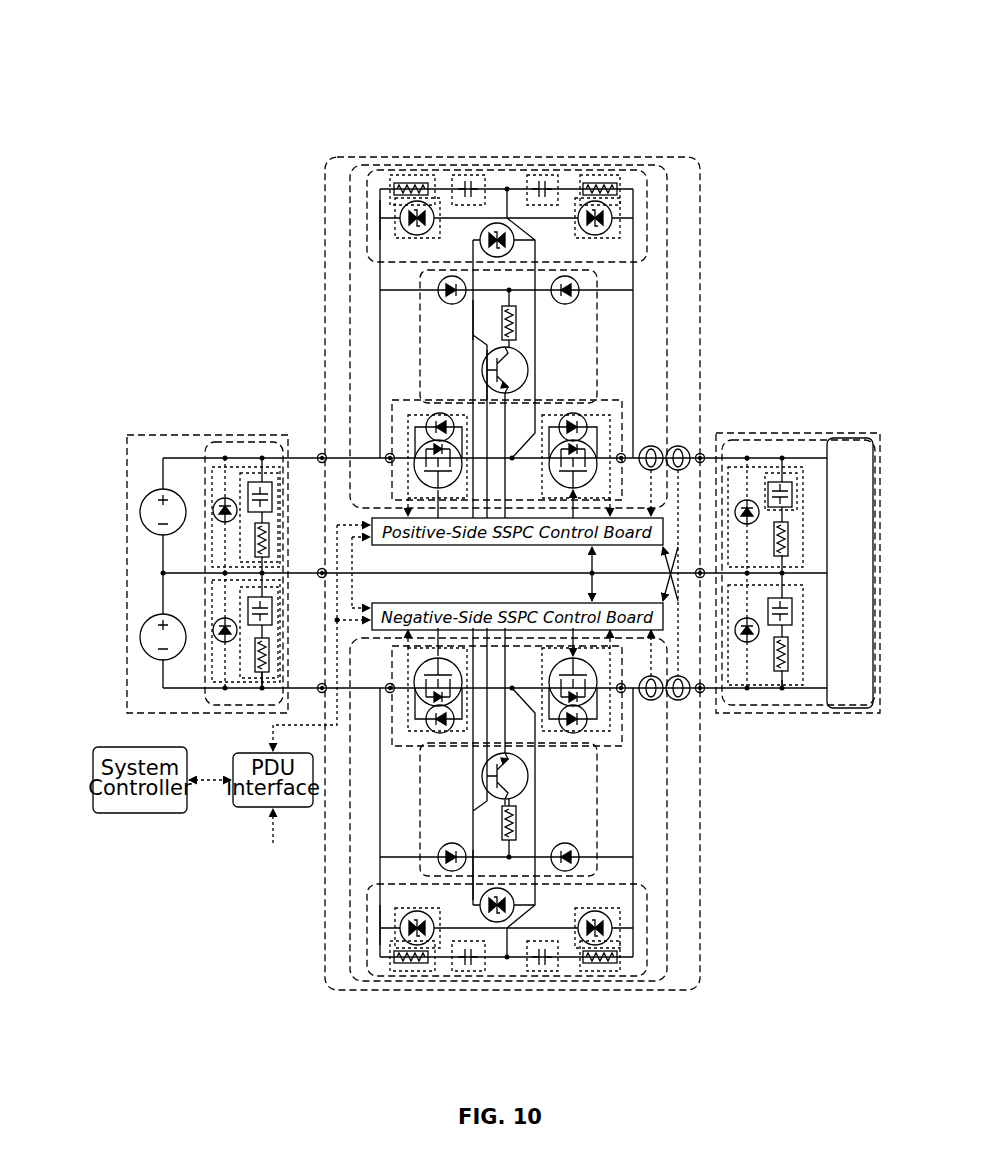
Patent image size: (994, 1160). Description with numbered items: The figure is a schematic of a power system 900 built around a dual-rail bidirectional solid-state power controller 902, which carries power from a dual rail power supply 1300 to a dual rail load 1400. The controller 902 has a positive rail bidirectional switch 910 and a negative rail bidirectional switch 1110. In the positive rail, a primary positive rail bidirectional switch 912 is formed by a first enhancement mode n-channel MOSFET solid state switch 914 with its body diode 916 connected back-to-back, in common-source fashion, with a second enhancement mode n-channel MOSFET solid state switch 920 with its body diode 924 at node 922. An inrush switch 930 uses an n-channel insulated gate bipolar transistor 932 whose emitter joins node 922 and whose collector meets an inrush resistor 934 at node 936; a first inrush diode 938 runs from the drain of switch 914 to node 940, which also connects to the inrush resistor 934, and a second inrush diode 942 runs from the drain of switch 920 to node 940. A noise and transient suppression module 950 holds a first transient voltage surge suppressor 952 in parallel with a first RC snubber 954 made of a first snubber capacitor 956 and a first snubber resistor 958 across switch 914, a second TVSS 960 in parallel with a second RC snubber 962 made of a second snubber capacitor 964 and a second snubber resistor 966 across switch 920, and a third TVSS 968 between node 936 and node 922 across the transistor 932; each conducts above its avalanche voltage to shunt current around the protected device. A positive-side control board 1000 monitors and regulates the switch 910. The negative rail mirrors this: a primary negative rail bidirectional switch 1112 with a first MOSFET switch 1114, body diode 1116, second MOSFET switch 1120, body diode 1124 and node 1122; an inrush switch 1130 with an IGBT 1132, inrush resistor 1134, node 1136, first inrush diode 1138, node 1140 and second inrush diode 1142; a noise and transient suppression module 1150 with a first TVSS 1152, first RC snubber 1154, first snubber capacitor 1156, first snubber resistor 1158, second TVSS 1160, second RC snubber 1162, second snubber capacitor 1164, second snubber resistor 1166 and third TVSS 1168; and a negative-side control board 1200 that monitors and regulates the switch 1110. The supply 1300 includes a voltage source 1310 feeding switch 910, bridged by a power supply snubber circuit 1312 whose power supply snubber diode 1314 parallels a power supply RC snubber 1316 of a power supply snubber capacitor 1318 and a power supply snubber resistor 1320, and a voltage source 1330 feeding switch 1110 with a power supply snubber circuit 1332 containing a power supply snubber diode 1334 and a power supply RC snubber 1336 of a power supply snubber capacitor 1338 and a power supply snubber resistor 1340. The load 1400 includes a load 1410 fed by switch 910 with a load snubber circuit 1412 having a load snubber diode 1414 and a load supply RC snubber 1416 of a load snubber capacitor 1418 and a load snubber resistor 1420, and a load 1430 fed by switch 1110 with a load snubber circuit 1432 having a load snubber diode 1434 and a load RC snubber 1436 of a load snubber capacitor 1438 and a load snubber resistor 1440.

The power system 900 is at (794, 50).
The dual-rail bidirectional solid-state power controller 902 is at (698, 162).
The positive rail bidirectional switch 910 is at (666, 170).
The primary positive rail bidirectional switch 912 is at (597, 450).
The first enhancement mode n-channel MOSFET solid state switch 914 is at (612, 447).
The body diode 916 is at (622, 410).
The second enhancement mode n-channel MOSFET solid state switch 920 is at (418, 448).
The node 922 is at (428, 419).
The body diode 924 is at (560, 419).
The inrush switch 930 is at (600, 280).
The n-channel insulated gate bipolar transistor 932 is at (482, 366).
The inrush resistor 934 is at (485, 346).
The node 936 is at (518, 335).
The first inrush diode 938 is at (580, 289).
The node 940 is at (440, 284).
The second inrush diode 942 is at (471, 320).
The noise and transient suppression module 950 is at (650, 192).
The first transient voltage surge suppressor 952 is at (621, 208).
The first RC snubber 954 is at (605, 183).
The first snubber capacitor 956 is at (545, 182).
The first snubber resistor 958 is at (595, 201).
The second transient voltage surge suppressor 960 is at (380, 212).
The second RC snubber 962 is at (400, 183).
The second snubber capacitor 964 is at (466, 182).
The second snubber resistor 966 is at (417, 201).
The third transient voltage surge suppressor 968 is at (480, 236).
The positive-side control board 1000 is at (690, 452).
The negative rail bidirectional switch 1110 is at (440, 982).
The primary negative rail bidirectional switch 1112 is at (597, 703).
The first enhancement mode n-channel MOSFET solid state switch 1114 is at (612, 735).
The body diode 1116 is at (622, 746).
The second enhancement mode n-channel MOSFET solid state switch 1120 is at (418, 698).
The node 1122 is at (410, 735).
The body diode 1124 is at (428, 728).
The inrush switch 1130 is at (598, 835).
The n-channel insulated gate bipolar transistor 1132 is at (528, 782).
The inrush resistor 1134 is at (440, 862).
The node 1136 is at (518, 832).
The first inrush diode 1138 is at (579, 858).
The node 1140 is at (511, 806).
The second inrush diode 1142 is at (480, 906).
The noise and transient suppression module 1150 is at (668, 985).
The first transient voltage surge suppressor 1152 is at (660, 935).
The first RC snubber 1154 is at (625, 970).
The first snubber capacitor 1156 is at (545, 970).
The first snubber resistor 1158 is at (600, 946).
The second transient voltage surge suppressor 1160 is at (378, 940).
The second RC snubber 1162 is at (400, 964).
The second snubber capacitor 1164 is at (470, 970).
The second snubber resistor 1166 is at (410, 946).
The third transient voltage surge suppressor 1168 is at (472, 872).
The negative-side control board 1200 is at (679, 732).
The dual rail power supply 1300 is at (127, 437).
The voltage source 1310 is at (141, 506).
The power supply snubber circuit 1312 is at (222, 498).
The power supply snubber diode 1314 is at (213, 506).
The power supply RC snubber 1316 is at (258, 476).
The power supply snubber capacitor 1318 is at (262, 482).
The power supply snubber resistor 1320 is at (254, 540).
The voltage source 1330 is at (141, 630).
The power supply snubber circuit 1332 is at (218, 690).
The power supply snubber diode 1334 is at (215, 640).
The power supply RC snubber 1336 is at (262, 690).
The power supply snubber capacitor 1338 is at (248, 611).
The power supply snubber resistor 1340 is at (254, 660).
The dual rail load 1400 is at (880, 437).
The load 1410 is at (836, 441).
The load snubber circuit 1412 is at (748, 468).
The load snubber diode 1414 is at (760, 514).
The load supply RC snubber 1416 is at (776, 470).
The load snubber capacitor 1418 is at (794, 503).
The load snubber resistor 1420 is at (789, 545).
The load 1430 is at (840, 689).
The load snubber circuit 1432 is at (800, 487).
The load snubber diode 1434 is at (747, 644).
The load RC snubber 1436 is at (820, 700).
The load snubber capacitor 1438 is at (775, 628).
The load snubber resistor 1440 is at (789, 656).